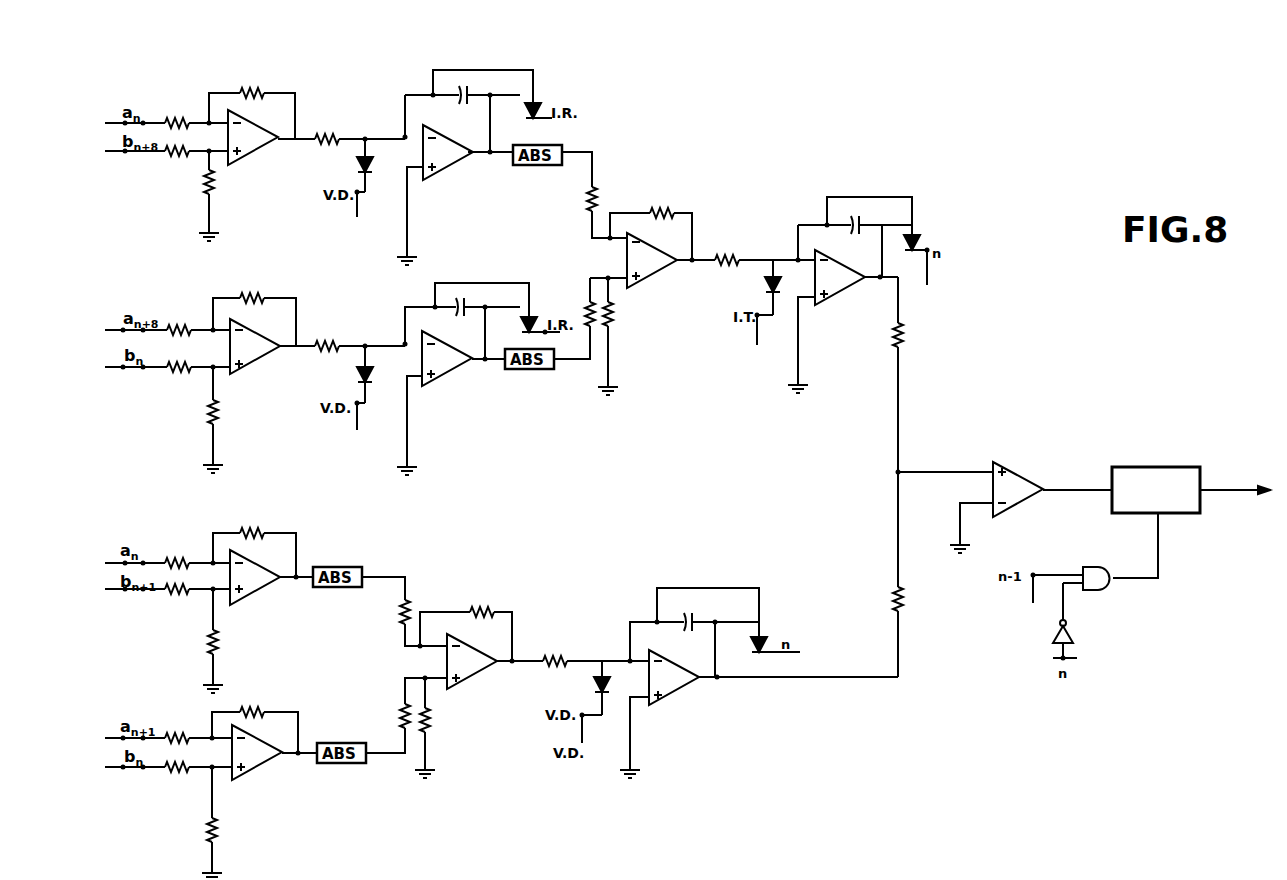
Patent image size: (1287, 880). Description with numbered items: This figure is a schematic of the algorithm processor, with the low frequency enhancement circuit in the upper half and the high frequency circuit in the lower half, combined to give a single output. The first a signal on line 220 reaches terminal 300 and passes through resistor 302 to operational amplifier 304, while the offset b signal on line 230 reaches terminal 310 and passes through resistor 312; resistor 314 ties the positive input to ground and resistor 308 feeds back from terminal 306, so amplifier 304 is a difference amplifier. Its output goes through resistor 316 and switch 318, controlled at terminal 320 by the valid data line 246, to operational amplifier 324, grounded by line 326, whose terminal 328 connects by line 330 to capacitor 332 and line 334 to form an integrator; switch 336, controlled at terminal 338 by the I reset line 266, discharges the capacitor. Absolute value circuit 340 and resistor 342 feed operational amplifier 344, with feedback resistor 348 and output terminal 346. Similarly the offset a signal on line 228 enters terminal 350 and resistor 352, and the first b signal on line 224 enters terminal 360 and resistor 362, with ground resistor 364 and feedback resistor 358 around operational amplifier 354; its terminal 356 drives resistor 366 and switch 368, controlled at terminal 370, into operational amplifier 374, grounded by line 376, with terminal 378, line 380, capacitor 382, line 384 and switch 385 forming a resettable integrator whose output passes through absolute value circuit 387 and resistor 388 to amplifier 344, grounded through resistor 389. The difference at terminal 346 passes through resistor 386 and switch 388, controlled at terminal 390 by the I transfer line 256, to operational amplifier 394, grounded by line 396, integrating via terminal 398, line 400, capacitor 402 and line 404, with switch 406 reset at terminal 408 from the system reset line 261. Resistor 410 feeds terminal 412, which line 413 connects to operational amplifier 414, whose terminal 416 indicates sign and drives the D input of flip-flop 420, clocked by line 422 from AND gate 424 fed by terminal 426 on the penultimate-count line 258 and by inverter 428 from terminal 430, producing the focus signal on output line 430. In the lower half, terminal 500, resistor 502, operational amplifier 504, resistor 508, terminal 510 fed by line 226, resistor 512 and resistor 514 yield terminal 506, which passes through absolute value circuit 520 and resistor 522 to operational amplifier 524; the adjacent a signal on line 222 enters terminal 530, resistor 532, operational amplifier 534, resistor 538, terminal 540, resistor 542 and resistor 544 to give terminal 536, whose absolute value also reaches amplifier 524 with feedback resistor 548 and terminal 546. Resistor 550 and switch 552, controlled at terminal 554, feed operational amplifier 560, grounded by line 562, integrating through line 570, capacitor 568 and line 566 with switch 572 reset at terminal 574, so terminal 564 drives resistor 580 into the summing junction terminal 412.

The line 220 is at (123, 126).
The line 230 is at (120, 155).
The terminal 300 is at (152, 112).
The resistor 302 is at (182, 122).
The operational amplifier 304 is at (263, 160).
The terminal 306 is at (291, 140).
The resistor 308 is at (265, 91).
The terminal 310 is at (158, 166).
The resistor 312 is at (185, 161).
The resistor 314 is at (212, 198).
The resistor 316 is at (328, 127).
The switch 318 is at (372, 155).
The terminal 320 is at (358, 180).
The line 246 is at (357, 213).
The operational amplifier 324 is at (456, 166).
The line 326 is at (407, 222).
The terminal 328 is at (493, 168).
The line 330 is at (500, 88).
The capacitor 332 is at (472, 100).
The line 334 is at (405, 112).
The switch 336 is at (541, 112).
The terminal 338 is at (543, 124).
The line 226 is at (552, 128).
The absolute value circuit 340 is at (545, 170).
The resistor 342 is at (585, 200).
The operational amplifier 344 is at (659, 275).
The terminal 346 is at (689, 260).
The resistor 348 is at (680, 203).
The resistor 386 is at (738, 266).
The switch 388 is at (774, 272).
The resistor 389 is at (610, 310).
The terminal 390 is at (768, 308).
The line 256 is at (757, 327).
The operational amplifier 394 is at (842, 306).
The line 396 is at (798, 346).
The terminal 398 is at (852, 278).
The line 400 is at (882, 260).
The capacitor 402 is at (860, 224).
The line 404 is at (811, 222).
The switch 406 is at (923, 239).
The terminal 408 is at (930, 248).
The line 261 is at (929, 272).
The resistor 410 is at (900, 335).
The terminal 412 is at (895, 468).
The line 413 is at (950, 448).
The operational amplifier 414 is at (1038, 460).
The terminal 416 is at (1068, 479).
The flip-flop 420 is at (1170, 466).
The line 422 is at (1165, 525).
The AND gate 424 is at (1097, 566).
The terminal 426 is at (1035, 570).
The line 258 is at (1028, 596).
The inverter 428 is at (1073, 640).
The output line 430 is at (1240, 478).
The resistor 580 is at (892, 594).
The line 228 is at (122, 332).
The line 224 is at (122, 371).
The resistor 352 is at (177, 324).
The terminal 350 is at (143, 328).
The terminal 360 is at (143, 367).
The resistor 362 is at (182, 368).
The resistor 364 is at (213, 420).
The resistor 358 is at (266, 298).
The operational amplifier 354 is at (257, 360).
The terminal 356 is at (294, 346).
The resistor 366 is at (347, 341).
The switch 368 is at (373, 365).
The terminal 370 is at (358, 390).
The operational amplifier 374 is at (447, 378).
The line 376 is at (407, 420).
The line 384 is at (404, 322).
The line 380 is at (483, 347).
The capacitor 382 is at (467, 303).
The switch 385 is at (533, 316).
The line 266 is at (550, 337).
The terminal 378 is at (485, 361).
The absolute value circuit 387 is at (512, 372).
The terminal 500 is at (145, 560).
The resistor 502 is at (192, 562).
The terminal 510 is at (143, 592).
The resistor 512 is at (184, 593).
The resistor 514 is at (214, 642).
The resistor 508 is at (266, 530).
The operational amplifier 504 is at (250, 606).
The terminal 506 is at (285, 581).
The absolute value circuit 520 is at (340, 566).
The resistor 522 is at (390, 618).
The line 222 is at (122, 740).
The terminal 530 is at (157, 736).
The resistor 532 is at (168, 736).
The terminal 540 is at (142, 769).
The resistor 542 is at (188, 768).
The resistor 544 is at (218, 822).
The resistor 538 is at (242, 703).
The operational amplifier 534 is at (242, 786).
The terminal 536 is at (296, 755).
The operational amplifier 524 is at (495, 647).
The resistor 548 is at (476, 612).
The terminal 546 is at (507, 668).
The resistor 550 is at (592, 676).
The switch 552 is at (602, 648).
The terminal 554 is at (580, 735).
The operational amplifier 560 is at (675, 703).
The line 562 is at (638, 740).
The line 570 is at (620, 645).
The capacitor 568 is at (695, 614).
The line 566 is at (713, 664).
The switch 572 is at (766, 637).
The terminal 574 is at (778, 655).
The terminal 564 is at (722, 683).